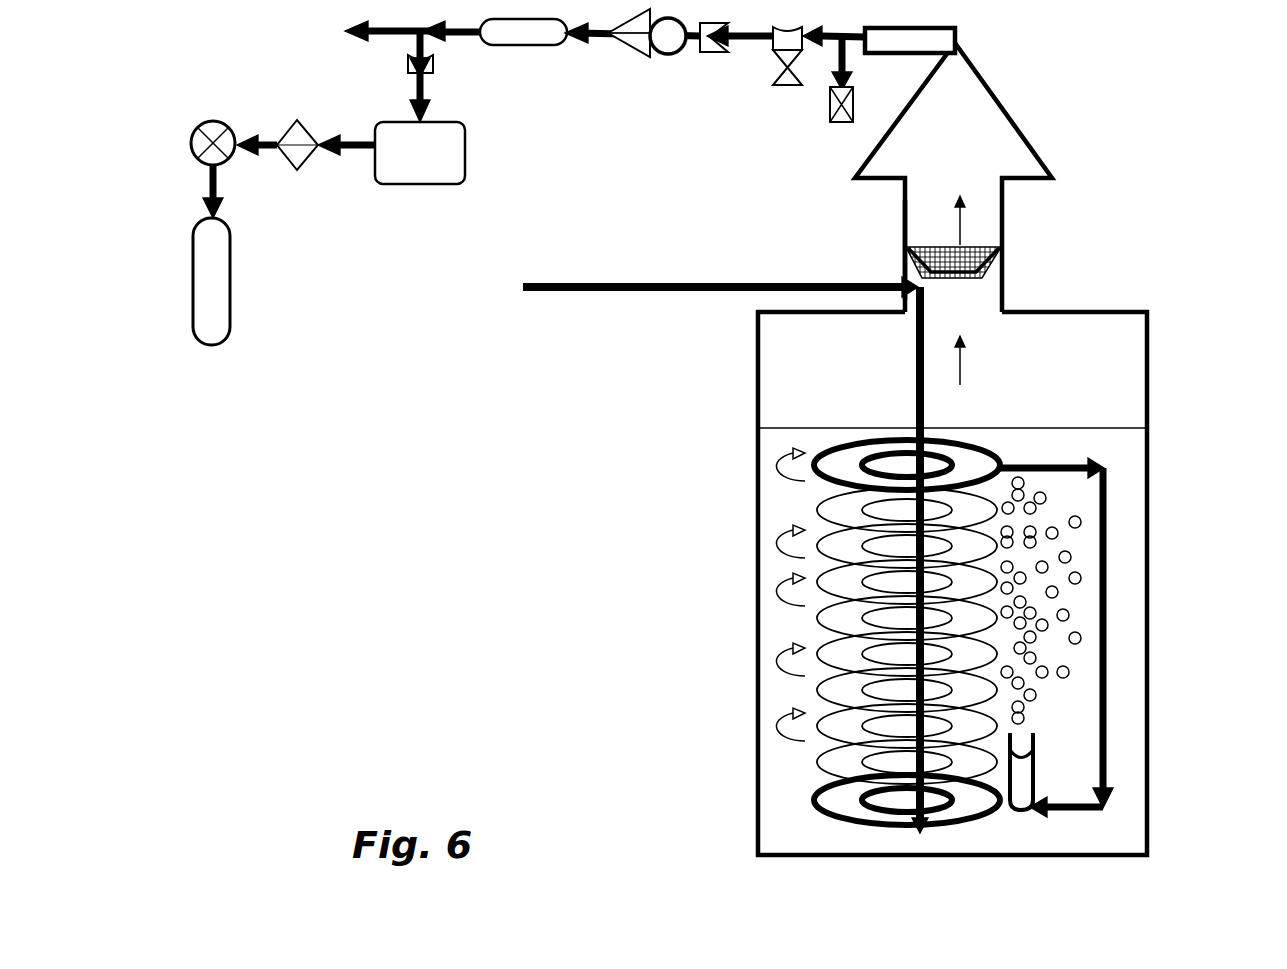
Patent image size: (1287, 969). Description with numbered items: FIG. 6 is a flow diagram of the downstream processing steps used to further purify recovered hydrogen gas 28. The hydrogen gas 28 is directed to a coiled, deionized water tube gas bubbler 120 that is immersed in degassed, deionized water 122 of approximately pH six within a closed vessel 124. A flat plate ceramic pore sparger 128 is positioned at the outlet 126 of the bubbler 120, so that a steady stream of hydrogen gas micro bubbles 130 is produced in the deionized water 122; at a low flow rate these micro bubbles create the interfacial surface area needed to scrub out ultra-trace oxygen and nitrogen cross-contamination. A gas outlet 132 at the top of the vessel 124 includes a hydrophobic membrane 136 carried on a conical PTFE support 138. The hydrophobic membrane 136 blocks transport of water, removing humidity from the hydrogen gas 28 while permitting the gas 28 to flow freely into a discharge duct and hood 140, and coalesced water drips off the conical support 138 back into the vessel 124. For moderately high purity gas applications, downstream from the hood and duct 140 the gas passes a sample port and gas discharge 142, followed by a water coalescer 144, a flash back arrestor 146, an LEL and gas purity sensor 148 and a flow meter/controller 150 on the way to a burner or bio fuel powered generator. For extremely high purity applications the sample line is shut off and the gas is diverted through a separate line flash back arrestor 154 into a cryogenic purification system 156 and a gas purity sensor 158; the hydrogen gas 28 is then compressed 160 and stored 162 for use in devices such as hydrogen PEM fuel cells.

The hydrogen gas 28 is at (960, 215).
The gas bubbler 120 is at (820, 512).
The deionized water 122 is at (1123, 500).
The closed vessel 124 is at (1147, 385).
The outlet 126 is at (1050, 815).
The ceramic pore sparger 128 is at (1035, 775).
The hydrogen gas micro bubbles 130 is at (1095, 588).
The gas outlet 132 is at (903, 220).
The hydrophobic membrane 136 is at (1000, 258).
The conical PTFE support 138 is at (990, 272).
The discharge duct and hood 140 is at (1010, 112).
The sample port and gas discharge 142 is at (832, 122).
The water coalescer 144 is at (787, 85).
The flash back arrestor 146 is at (712, 52).
The LEL and gas purity sensor 148 is at (660, 55).
The flow meter/controller 150 is at (535, 45).
The flash back arrestor 154 is at (435, 65).
The cryogenic purification system 156 is at (465, 178).
The gas purity sensor 158 is at (305, 165).
The compressor 160 is at (232, 158).
The storage 162 is at (230, 325).